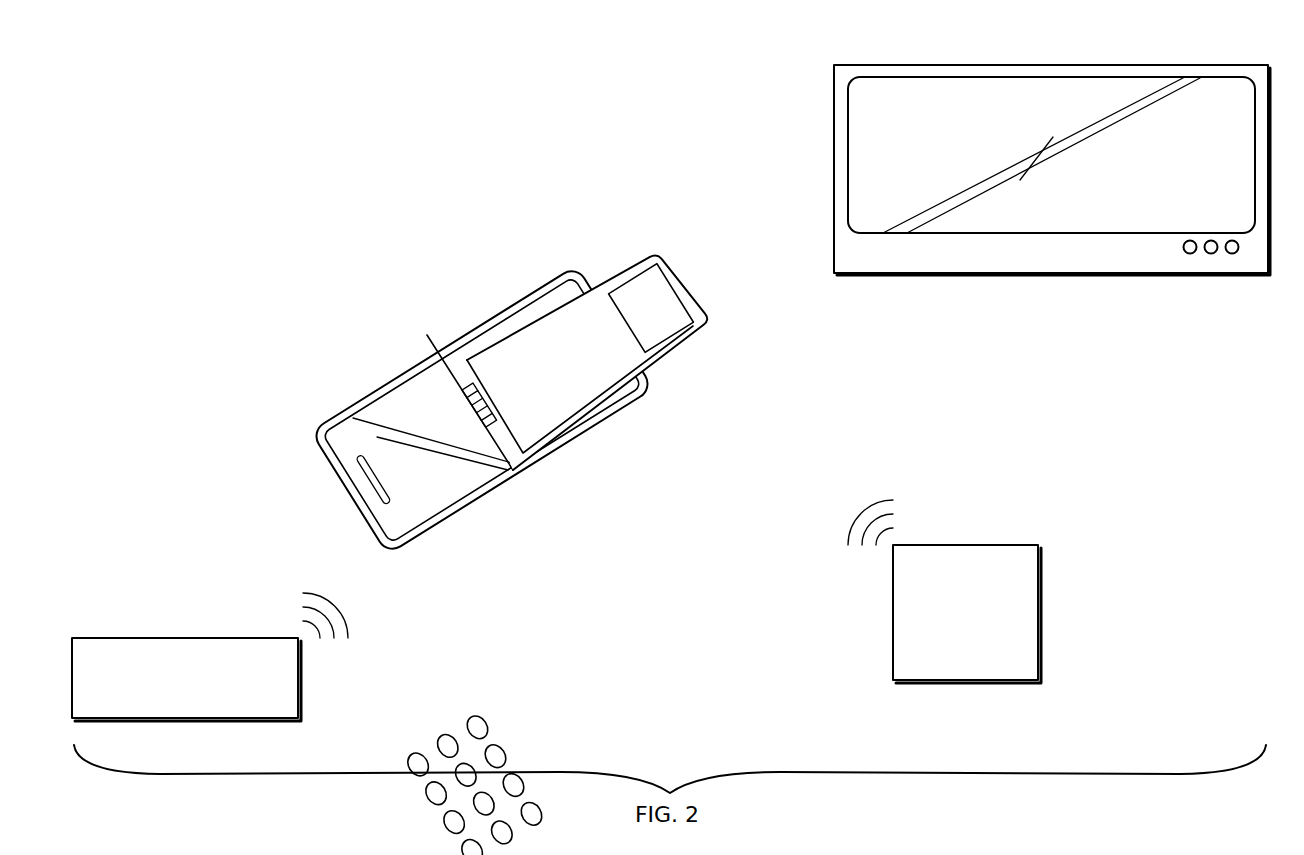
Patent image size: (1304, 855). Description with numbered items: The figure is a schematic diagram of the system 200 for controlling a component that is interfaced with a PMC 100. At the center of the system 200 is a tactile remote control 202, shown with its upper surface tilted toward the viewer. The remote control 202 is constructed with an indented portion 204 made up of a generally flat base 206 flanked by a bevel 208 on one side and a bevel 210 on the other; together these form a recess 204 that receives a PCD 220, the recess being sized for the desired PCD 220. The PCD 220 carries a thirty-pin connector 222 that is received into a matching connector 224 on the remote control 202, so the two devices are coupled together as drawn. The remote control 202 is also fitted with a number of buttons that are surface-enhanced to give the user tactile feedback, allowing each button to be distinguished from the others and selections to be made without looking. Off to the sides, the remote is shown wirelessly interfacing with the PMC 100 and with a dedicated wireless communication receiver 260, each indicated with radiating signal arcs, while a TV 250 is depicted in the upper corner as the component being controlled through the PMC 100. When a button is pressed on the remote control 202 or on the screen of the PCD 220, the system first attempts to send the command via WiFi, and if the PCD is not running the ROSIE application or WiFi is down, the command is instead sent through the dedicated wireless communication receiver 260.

The system 200 is at (262, 123).
The remote control 202 is at (509, 560).
The indented portion 204 is at (616, 332).
The generally flat base 206 is at (641, 378).
The bevel 208 is at (560, 283).
The bevel 210 is at (612, 412).
The PCD 220 is at (668, 318).
The 30 pin connector 222 is at (513, 470).
The matching connector 224 is at (465, 391).
The TV 250 is at (1188, 208).
The PMC 100 is at (951, 635).
The dedicated wireless communication receiver 260 is at (248, 702).